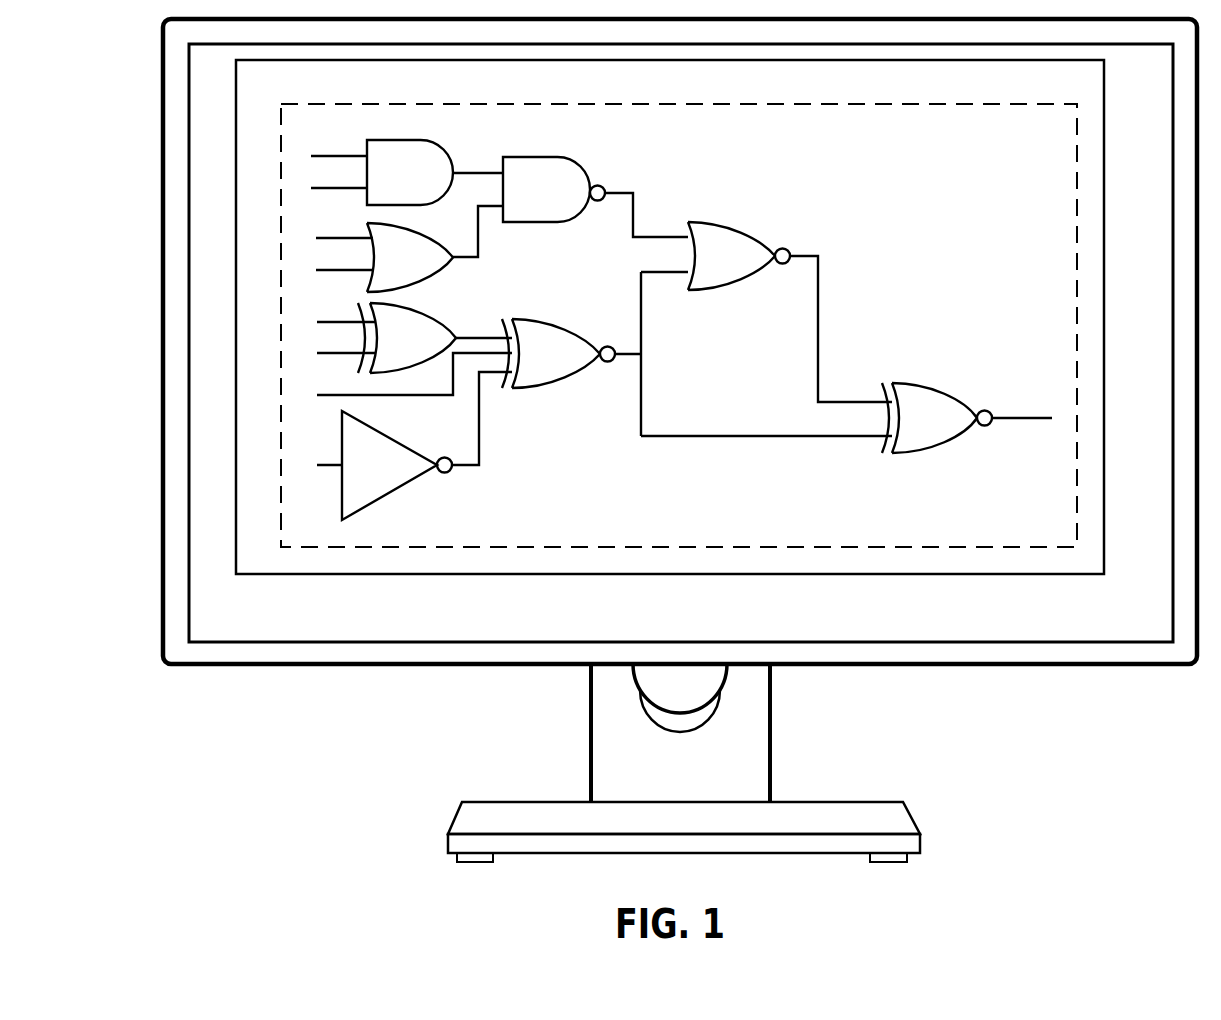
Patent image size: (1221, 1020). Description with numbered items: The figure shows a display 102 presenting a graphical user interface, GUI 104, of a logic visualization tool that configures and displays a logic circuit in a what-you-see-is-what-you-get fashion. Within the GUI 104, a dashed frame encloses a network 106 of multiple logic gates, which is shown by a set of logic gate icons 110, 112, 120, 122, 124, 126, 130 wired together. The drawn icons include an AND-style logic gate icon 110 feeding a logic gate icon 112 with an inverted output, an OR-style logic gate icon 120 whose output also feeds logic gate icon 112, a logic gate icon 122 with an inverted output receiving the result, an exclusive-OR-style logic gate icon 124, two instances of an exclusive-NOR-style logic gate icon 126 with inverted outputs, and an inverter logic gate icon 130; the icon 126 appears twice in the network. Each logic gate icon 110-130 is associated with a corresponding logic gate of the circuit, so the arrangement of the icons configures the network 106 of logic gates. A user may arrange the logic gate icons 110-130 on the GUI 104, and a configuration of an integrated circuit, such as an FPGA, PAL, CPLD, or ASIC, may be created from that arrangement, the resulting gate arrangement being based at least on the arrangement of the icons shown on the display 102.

The display 102 is at (163, 258).
The GUI 104 is at (322, 88).
The network 106 is at (679, 104).
The logic gate icon 110 is at (427, 186).
The logic gate icon 112 is at (563, 200).
The logic gate icon 120 is at (427, 261).
The logic gate icon 122 is at (748, 268).
The logic gate icon 124 is at (430, 350).
The logic gate icon 126 is at (571, 366).
The logic gate icon 130 is at (395, 478).